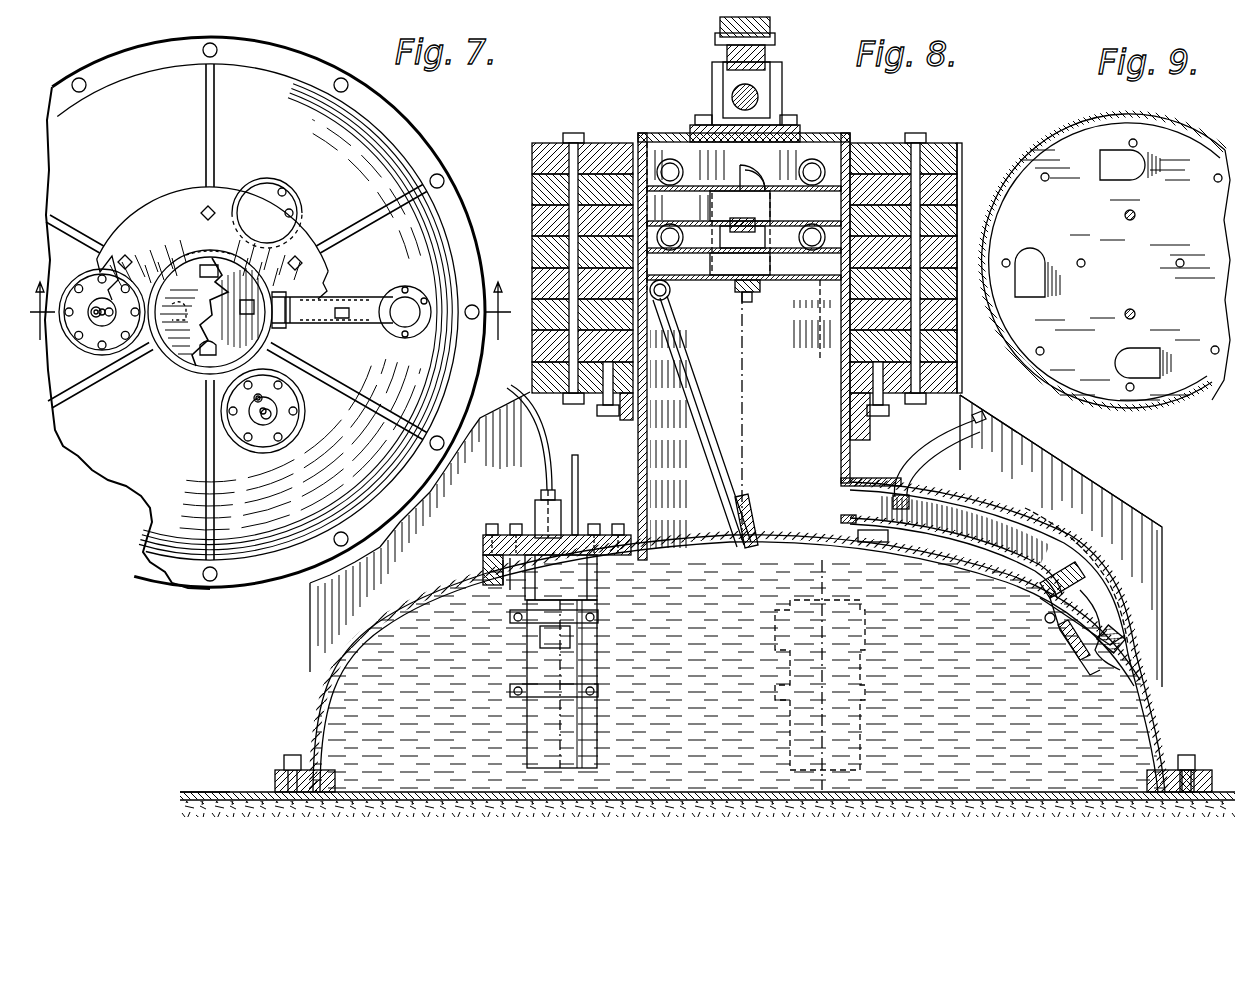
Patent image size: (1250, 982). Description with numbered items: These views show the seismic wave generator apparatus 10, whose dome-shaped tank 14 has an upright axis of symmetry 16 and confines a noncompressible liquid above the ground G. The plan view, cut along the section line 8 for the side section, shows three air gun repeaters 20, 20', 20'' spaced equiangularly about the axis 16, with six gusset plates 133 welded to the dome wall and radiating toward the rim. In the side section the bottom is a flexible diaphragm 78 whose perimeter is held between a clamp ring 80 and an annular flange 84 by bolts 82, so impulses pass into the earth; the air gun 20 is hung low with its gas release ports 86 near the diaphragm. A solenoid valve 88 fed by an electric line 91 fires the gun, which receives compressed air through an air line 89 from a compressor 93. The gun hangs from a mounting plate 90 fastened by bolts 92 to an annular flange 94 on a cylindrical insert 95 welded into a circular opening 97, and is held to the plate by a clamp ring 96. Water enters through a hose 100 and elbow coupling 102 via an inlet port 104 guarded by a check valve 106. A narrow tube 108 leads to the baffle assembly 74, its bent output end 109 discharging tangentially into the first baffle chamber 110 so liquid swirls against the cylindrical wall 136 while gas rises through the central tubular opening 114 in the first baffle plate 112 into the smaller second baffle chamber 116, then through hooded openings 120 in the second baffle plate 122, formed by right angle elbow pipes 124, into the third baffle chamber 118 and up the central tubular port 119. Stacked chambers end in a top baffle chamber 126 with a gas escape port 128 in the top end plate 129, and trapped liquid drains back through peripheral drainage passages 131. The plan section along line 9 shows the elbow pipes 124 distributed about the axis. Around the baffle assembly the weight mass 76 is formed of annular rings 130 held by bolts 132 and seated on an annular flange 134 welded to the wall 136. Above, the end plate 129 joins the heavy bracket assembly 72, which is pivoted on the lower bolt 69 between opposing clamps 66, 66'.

In FIG. 7, the section line 8 is at (270, 298).
In FIG. 8, the section line 9 is at (618, 232).
In FIG. 8, the seismic wave generator apparatus 10 is at (998, 100).
In FIG. 7, the dome-shaped tank 14 is at (395, 172).
In FIG. 8, the dome-shaped tank 14 is at (1145, 672).
In FIG. 8, the axis of symmetry 16 is at (748, 466).
In FIG. 9, the axis of symmetry 16 is at (1150, 272).
In FIG. 7, the acoustical air gun repeater 20 is at (82, 277).
In FIG. 8, the acoustical air gun repeater 20 is at (577, 684).
In FIG. 7, the acoustical air gun repeater 20' is at (292, 208).
In FIG. 8, the acoustical air gun repeater 20' is at (845, 675).
In FIG. 7, the acoustical air gun repeater 20'' is at (244, 453).
In FIG. 8, the clamp 66 is at (779, 57).
In FIG. 8, the clamp 66' is at (712, 30).
In FIG. 8, the lower bolt 69 is at (775, 40).
In FIG. 8, the bracket assembly 72 is at (790, 92).
In FIG. 8, the baffle assembly 74 is at (858, 460).
In FIG. 9, the baffle assembly 74 is at (1178, 123).
In FIG. 7, the weight mass 76 is at (150, 215).
In FIG. 8, the bottom / diaphragm 78 is at (1010, 800).
In FIG. 8, the clamp ring 80 is at (1172, 800).
In FIG. 7, the bolts 82 is at (208, 46).
In FIG. 8, the bolts 82 is at (292, 752).
In FIG. 8, the annular flange 84 is at (1198, 772).
In FIG. 8, the gas release ports 86 is at (572, 640).
In FIG. 7, the solenoid valve 88 is at (100, 340).
In FIG. 8, the solenoid valve 88 is at (540, 505).
In FIG. 8, the air line / air hose 89 is at (578, 457).
In FIG. 7, the mounting plate 90 is at (257, 182).
In FIG. 8, the mounting plate 90 is at (895, 538).
In FIG. 8, the electric line 91 is at (545, 430).
In FIG. 8, the bolts 92 is at (492, 524).
In FIG. 8, the compressor 93 is at (518, 524).
In FIG. 8, the annular flange 94 is at (482, 543).
In FIG. 8, the cylindrical insert 95 is at (480, 572).
In FIG. 8, the clamp ring 96 is at (510, 590).
In FIG. 8, the circular opening 97 is at (488, 590).
In FIG. 7, the hose 100 is at (385, 305).
In FIG. 8, the hose 100 is at (980, 440).
In FIG. 7, the tubular elbow coupling 102 is at (375, 332).
In FIG. 8, the tubular elbow coupling 102 is at (1025, 515).
In FIG. 8, the water inlet port 104 is at (1100, 598).
In FIG. 8, the check valve 106 is at (1045, 630).
In FIG. 8, the tube / conduit 108 is at (715, 415).
In FIG. 8, the output end 109 is at (655, 312).
In FIG. 8, the first baffle chamber 110 is at (808, 369).
In FIG. 8, the first baffle plate 112 is at (820, 280).
In FIG. 8, the central tubular opening 114 is at (748, 300).
In FIG. 8, the second baffle chamber 116 is at (762, 274).
In FIG. 8, the third baffle chamber 118 is at (796, 246).
In FIG. 8, the central tubular port 119 is at (745, 195).
In FIG. 8, the hooded openings 120 is at (648, 275).
In FIG. 9, the hooded openings 120 is at (1155, 178).
In FIG. 8, the second baffle plate 122 is at (760, 280).
In FIG. 9, the second baffle plate 122 is at (1215, 400).
In FIG. 8, the right angle elbow pipes 124 is at (805, 188).
In FIG. 9, the right angle elbow pipes 124 is at (1125, 212).
In FIG. 8, the top baffle chamber 126 is at (690, 150).
In FIG. 8, the gas escape port 128 is at (810, 150).
In FIG. 7, the top end plate 129 is at (175, 352).
In FIG. 8, the top end plate 129 is at (655, 145).
In FIG. 8, the annular rings 130 is at (960, 330).
In FIG. 8, the peripheral drainage passages 131 is at (845, 182).
In FIG. 9, the peripheral drainage passages 131 is at (1140, 144).
In FIG. 7, the bolts 132 is at (205, 208).
In FIG. 8, the bolts 132 is at (595, 345).
In FIG. 7, the gusset plates 133 is at (214, 108).
In FIG. 8, the gusset plates 133 is at (1055, 485).
In FIG. 8, the annular flange 134 is at (870, 428).
In FIG. 7, the external wall / cylindrical wall 136 is at (180, 378).
In FIG. 8, the external wall / cylindrical wall 136 is at (895, 135).
In FIG. 9, the external wall / cylindrical wall 136 is at (1145, 410).
In FIG. 8, the ground G is at (220, 792).